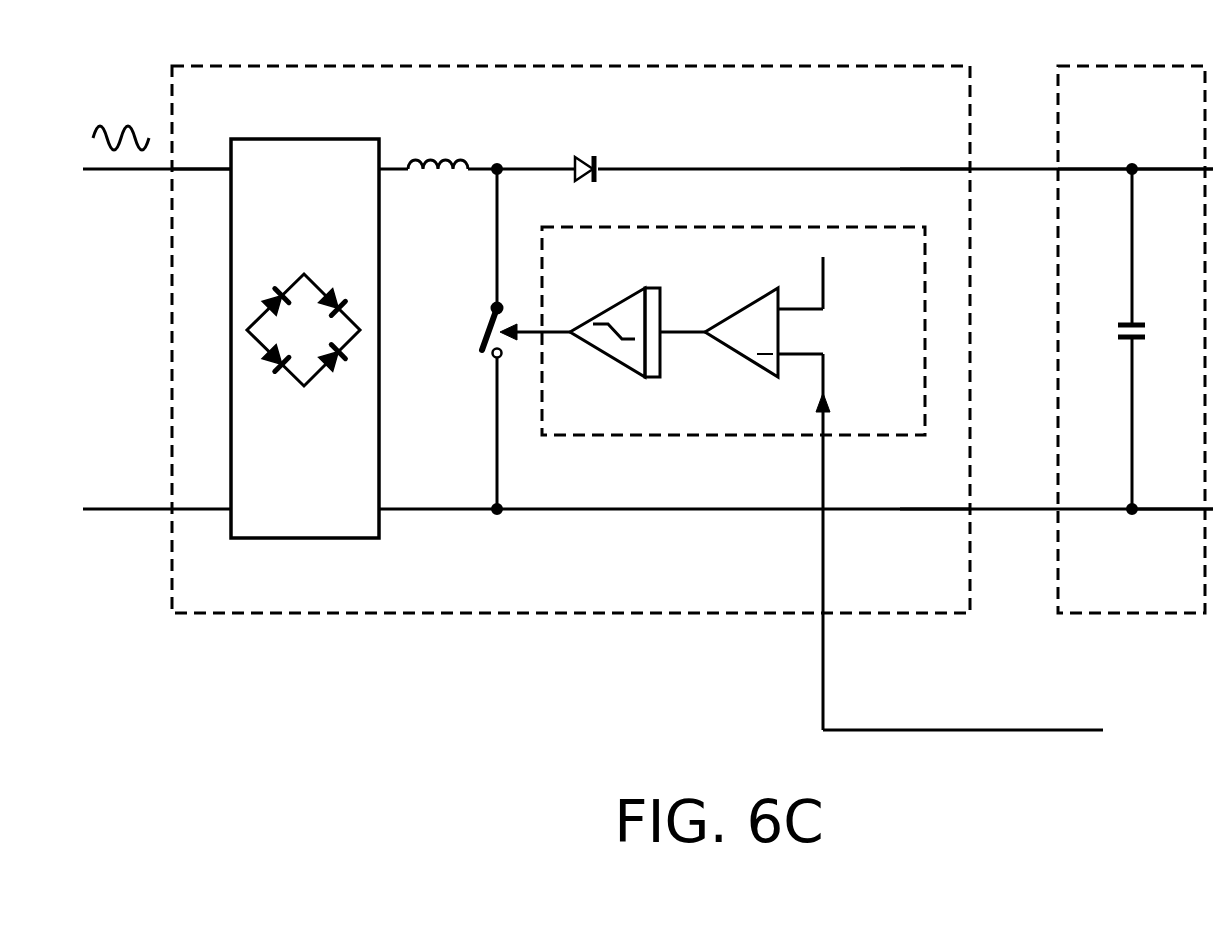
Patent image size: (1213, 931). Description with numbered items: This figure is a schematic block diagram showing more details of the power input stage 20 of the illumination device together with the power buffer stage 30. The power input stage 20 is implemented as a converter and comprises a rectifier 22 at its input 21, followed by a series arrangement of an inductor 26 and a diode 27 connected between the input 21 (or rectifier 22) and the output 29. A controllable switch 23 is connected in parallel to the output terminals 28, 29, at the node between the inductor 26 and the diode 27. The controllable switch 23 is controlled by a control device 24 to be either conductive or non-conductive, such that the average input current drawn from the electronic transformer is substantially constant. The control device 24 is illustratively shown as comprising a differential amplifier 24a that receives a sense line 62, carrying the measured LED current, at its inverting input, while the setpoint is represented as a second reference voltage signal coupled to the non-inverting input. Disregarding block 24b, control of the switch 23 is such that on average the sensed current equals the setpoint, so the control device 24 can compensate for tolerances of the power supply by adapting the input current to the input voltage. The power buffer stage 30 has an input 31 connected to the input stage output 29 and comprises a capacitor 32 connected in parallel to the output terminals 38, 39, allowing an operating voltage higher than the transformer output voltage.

The power input stage 20 is at (400, 613).
The input 21 is at (201, 154).
The rectifier 22 is at (324, 139).
The controllable switch 23 is at (481, 332).
The control device 24 is at (607, 435).
The differential amplifier 24a is at (735, 355).
The block 24b is at (604, 355).
The inductor 26 is at (447, 157).
The diode 27 is at (586, 157).
The output terminal 28 is at (935, 526).
The output 29 is at (935, 154).
The power buffer stage 30 is at (1120, 613).
The input 31 is at (1095, 154).
The capacitor 32 is at (1120, 345).
The output terminal 38 is at (1172, 526).
The output terminal 39 is at (1172, 154).
The sense line 62 is at (988, 730).